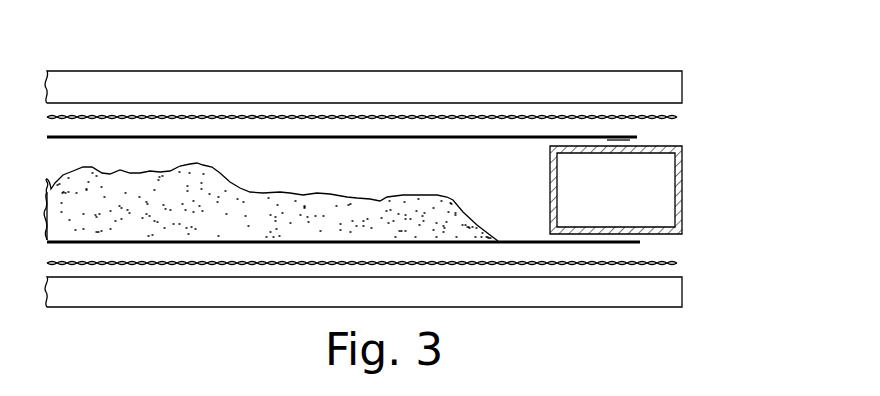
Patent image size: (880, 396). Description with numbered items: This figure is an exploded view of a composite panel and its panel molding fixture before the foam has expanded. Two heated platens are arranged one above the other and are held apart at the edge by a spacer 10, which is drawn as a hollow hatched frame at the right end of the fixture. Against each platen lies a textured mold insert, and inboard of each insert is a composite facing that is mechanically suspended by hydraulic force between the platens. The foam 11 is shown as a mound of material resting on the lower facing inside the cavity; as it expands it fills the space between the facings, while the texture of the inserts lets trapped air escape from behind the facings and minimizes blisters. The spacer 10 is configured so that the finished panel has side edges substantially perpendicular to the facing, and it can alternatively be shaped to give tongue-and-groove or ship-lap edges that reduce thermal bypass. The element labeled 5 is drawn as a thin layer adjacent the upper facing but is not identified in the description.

The sealing film 5 is at (630, 140).
The edge spacer 10 is at (682, 192).
The foam 11 is at (452, 213).